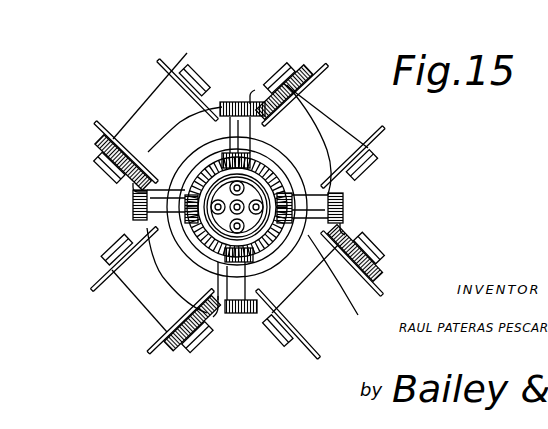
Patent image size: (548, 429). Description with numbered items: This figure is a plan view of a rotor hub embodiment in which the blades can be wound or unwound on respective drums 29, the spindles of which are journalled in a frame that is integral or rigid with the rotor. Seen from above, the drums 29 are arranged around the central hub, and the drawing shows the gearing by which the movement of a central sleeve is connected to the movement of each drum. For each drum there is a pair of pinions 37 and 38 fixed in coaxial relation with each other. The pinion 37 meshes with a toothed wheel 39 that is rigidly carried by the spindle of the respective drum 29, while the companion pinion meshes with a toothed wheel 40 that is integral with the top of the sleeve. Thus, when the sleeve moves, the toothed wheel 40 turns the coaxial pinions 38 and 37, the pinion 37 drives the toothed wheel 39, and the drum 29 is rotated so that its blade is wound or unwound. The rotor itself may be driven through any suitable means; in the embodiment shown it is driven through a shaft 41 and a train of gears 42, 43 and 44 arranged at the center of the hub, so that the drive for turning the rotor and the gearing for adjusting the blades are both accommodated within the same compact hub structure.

The drum 29 is at (320, 117).
The pinion 37 is at (133, 208).
The pinion 38 is at (184, 195).
The toothed wheel 39 is at (100, 143).
The toothed wheel 40 is at (235, 188).
The shaft 41 is at (237, 200).
The gear 42 is at (320, 71).
The gear 43 is at (273, 192).
The gear 44 is at (265, 235).